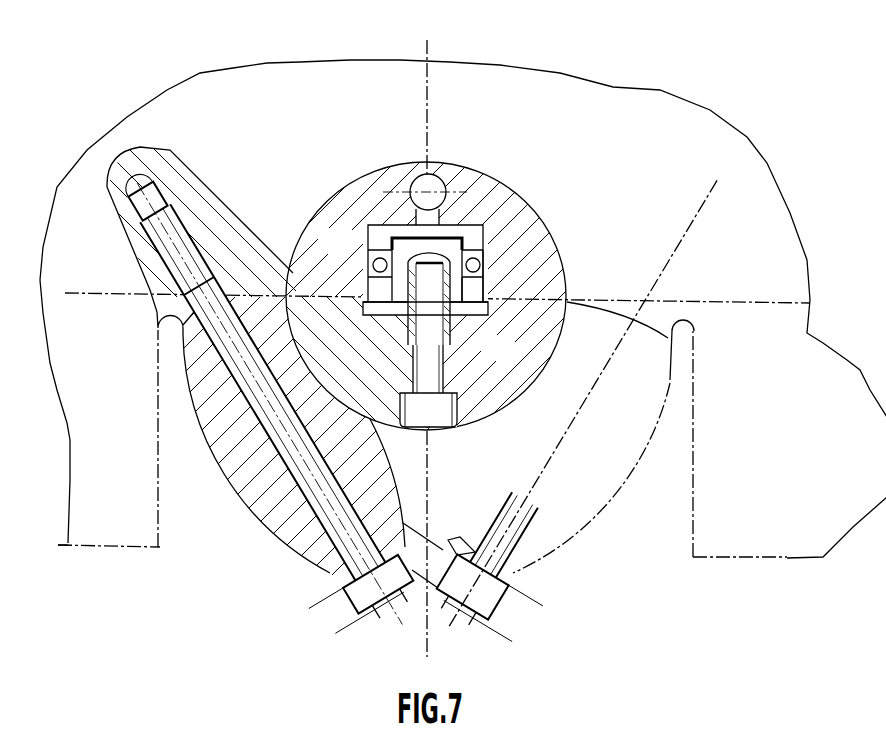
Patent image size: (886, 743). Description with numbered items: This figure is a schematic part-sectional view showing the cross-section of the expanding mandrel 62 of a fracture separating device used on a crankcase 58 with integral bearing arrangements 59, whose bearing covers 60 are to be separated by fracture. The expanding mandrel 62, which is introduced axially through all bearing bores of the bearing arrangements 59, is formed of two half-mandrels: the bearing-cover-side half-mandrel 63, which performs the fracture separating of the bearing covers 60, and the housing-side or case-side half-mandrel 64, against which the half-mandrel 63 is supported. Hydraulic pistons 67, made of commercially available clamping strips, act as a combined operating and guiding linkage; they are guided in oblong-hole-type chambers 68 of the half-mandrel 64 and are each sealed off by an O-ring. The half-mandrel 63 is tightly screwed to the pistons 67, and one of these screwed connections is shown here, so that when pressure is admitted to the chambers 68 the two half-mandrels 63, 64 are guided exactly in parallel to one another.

The crankcase 58 is at (790, 557).
The bearing arrangements 59 is at (632, 254).
The bearing covers 60 is at (488, 480).
The expanding mandrel 62 is at (532, 432).
The bearing-cover-side half-mandrel 63 is at (512, 359).
The housing-side half-mandrel 64 is at (349, 252).
The hydraulic pistons 67 is at (487, 285).
The oblong-hole-type chambers 68 is at (473, 232).